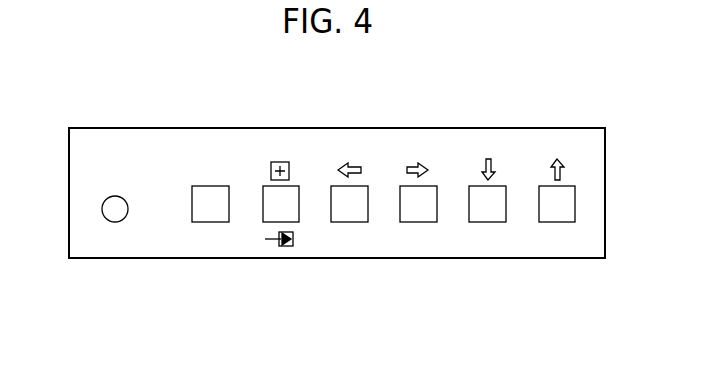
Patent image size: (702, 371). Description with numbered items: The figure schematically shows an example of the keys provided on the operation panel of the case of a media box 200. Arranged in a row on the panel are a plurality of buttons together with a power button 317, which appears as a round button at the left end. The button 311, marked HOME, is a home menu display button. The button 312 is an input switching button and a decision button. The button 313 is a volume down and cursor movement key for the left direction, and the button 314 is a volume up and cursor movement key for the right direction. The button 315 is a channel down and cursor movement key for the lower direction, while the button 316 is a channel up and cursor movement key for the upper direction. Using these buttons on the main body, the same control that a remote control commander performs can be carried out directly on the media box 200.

The media box 200 is at (555, 128).
The home menu display button 311 is at (192, 222).
The input switching button and decision button 312 is at (299, 213).
The volume down and cursor movement key (left direction) 313 is at (350, 222).
The volume up and cursor movement key (right direction) 314 is at (420, 222).
The channel down and cursor movement key (lower direction) 315 is at (492, 222).
The channel up and cursor movement key (upper direction) 316 is at (553, 222).
The power button 317 is at (115, 222).